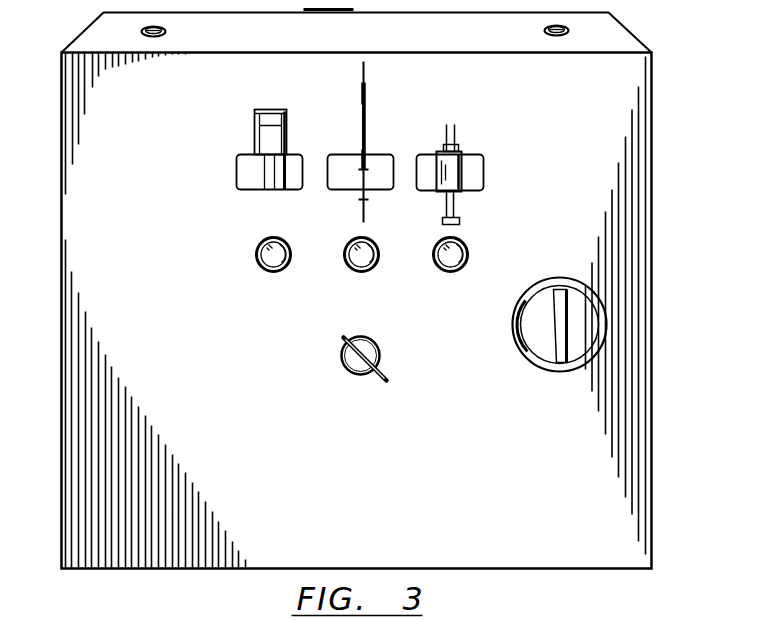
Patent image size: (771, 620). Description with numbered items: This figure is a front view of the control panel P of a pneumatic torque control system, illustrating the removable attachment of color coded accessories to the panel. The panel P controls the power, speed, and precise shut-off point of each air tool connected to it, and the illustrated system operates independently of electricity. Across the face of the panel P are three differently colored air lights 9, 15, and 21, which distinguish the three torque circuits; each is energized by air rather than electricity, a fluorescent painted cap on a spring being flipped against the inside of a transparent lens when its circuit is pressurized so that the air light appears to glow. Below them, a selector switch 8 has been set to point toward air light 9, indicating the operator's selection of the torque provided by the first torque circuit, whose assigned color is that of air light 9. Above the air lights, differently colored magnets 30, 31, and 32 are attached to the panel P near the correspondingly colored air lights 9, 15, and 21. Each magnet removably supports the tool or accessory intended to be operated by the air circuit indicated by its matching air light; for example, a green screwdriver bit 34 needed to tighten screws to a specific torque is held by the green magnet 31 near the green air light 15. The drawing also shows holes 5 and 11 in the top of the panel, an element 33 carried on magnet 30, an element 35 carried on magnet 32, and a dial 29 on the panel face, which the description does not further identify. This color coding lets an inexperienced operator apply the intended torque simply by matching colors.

The control panel P is at (615, 540).
The mounting hole 5 is at (143, 29).
The mounting hole 11 is at (570, 26).
The magnet 30 is at (240, 172).
The switch knob 33 is at (258, 130).
The magnet 31 is at (372, 156).
The screwdriver bit 34 is at (358, 110).
The magnet 32 is at (477, 168).
The switch body 35 is at (452, 152).
The air light 9 is at (257, 261).
The air light 15 is at (350, 263).
The air light 21 is at (441, 266).
The selector switch 8 is at (349, 375).
The dial 29 is at (561, 365).